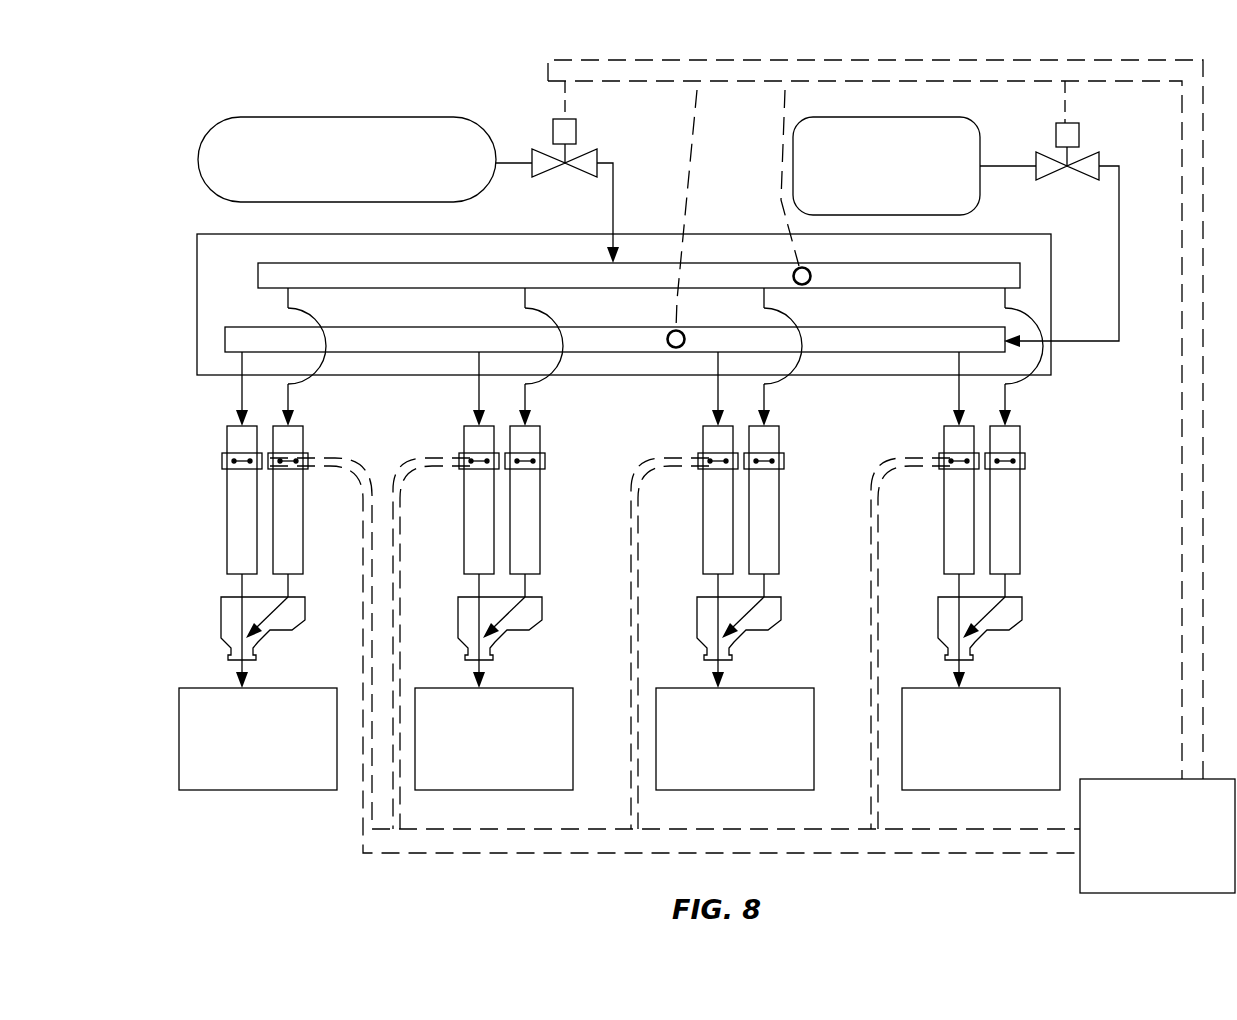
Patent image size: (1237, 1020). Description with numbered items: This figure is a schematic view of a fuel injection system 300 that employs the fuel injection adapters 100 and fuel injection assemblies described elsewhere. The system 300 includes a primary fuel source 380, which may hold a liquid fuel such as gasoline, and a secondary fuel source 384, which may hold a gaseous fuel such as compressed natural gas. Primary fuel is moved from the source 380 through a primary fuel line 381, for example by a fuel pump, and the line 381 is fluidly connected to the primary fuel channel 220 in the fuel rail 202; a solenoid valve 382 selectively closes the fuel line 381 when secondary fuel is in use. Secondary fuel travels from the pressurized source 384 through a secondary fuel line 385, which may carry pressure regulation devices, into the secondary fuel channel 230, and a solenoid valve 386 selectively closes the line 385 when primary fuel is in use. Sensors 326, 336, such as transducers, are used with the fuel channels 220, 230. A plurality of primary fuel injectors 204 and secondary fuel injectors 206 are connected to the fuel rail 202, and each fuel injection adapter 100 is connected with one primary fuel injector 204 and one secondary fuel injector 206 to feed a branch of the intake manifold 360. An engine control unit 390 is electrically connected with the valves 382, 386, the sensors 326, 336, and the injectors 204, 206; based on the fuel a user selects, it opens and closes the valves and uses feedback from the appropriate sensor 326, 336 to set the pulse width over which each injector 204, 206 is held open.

The fuel injection system 300 is at (194, 80).
The secondary fuel source 384 is at (362, 117).
The secondary fuel line 385 is at (506, 163).
The solenoid valve 386 is at (553, 128).
The primary fuel source 380 is at (980, 188).
The solenoid valve 382 is at (1056, 135).
The primary fuel line 381 is at (1119, 275).
The fuel rail 202 is at (197, 278).
The primary fuel channel 220 is at (629, 316).
The secondary fuel channel 230 is at (721, 256).
The sensor 326 is at (668, 346).
The sensor 336 is at (810, 280).
The primary fuel injector 204 is at (247, 525).
The secondary fuel injector 206 is at (288, 527).
The fuel injection adapter 100 is at (230, 613).
The intake manifold 360 is at (619, 739).
The engine control unit 390 is at (1143, 779).